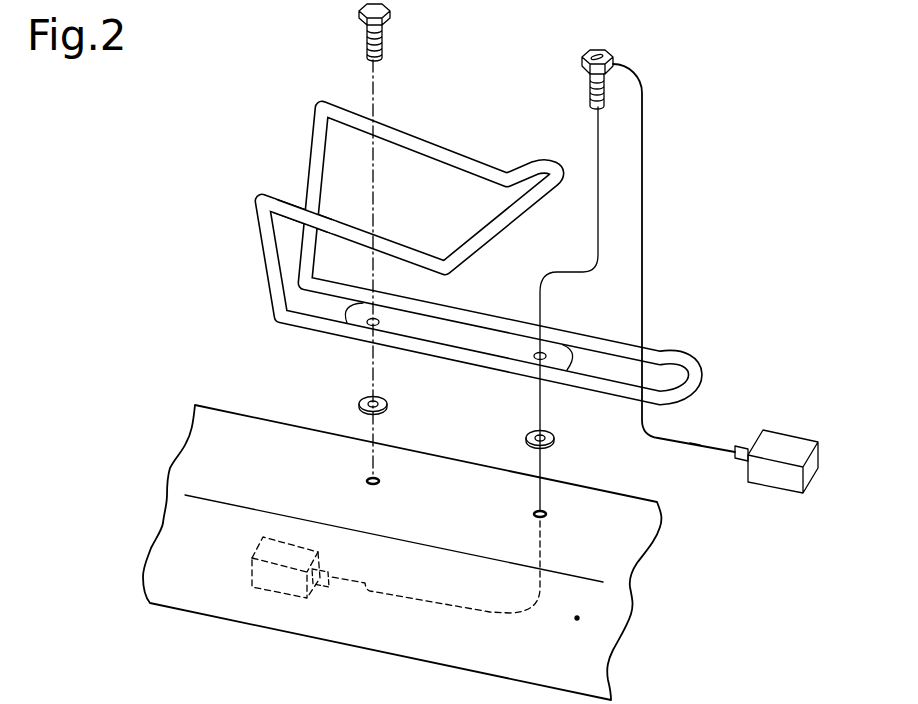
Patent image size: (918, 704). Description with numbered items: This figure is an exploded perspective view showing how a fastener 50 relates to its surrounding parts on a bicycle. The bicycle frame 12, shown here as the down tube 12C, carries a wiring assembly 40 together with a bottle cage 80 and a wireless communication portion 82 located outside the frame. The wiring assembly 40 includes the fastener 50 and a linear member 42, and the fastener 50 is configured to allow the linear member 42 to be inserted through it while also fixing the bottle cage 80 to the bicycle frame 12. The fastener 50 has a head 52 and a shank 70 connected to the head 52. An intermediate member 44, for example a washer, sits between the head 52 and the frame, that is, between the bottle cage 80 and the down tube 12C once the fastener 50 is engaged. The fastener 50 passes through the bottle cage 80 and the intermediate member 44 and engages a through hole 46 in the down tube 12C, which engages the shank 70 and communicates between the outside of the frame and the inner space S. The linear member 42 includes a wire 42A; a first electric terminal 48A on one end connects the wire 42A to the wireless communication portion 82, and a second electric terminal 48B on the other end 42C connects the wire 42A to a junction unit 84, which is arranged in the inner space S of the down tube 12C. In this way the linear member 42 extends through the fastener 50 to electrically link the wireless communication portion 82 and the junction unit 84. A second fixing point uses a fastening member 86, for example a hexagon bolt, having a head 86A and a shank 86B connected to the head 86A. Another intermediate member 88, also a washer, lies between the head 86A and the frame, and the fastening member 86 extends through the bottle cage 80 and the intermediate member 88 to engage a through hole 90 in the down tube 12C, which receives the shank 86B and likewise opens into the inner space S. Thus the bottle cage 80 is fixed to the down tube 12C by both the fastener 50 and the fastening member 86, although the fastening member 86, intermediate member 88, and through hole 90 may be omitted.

The bicycle frame 12 is at (215, 677).
The down tube 12C is at (593, 487).
The wiring assembly 40 is at (761, 49).
The linear member 42 is at (696, 258).
The wire 42A is at (645, 192).
The other end of the wire 42C is at (384, 612).
The intermediate member 44 is at (555, 436).
The through hole 46 is at (548, 514).
The first electric terminal 48A is at (738, 464).
The second electric terminal 48B is at (701, 441).
The fastener 50 is at (508, 55).
The head 52 is at (582, 60).
The shank 70 is at (590, 90).
The bottle cage 80 is at (441, 131).
The wireless communication portion 82 is at (820, 441).
The junction unit 84 is at (250, 572).
The fastening member 86 is at (275, 5).
The head 86A is at (358, 11).
The shank 86B is at (367, 40).
The intermediate member 88 is at (388, 404).
The through hole 90 is at (381, 482).
The inner space S is at (578, 618).